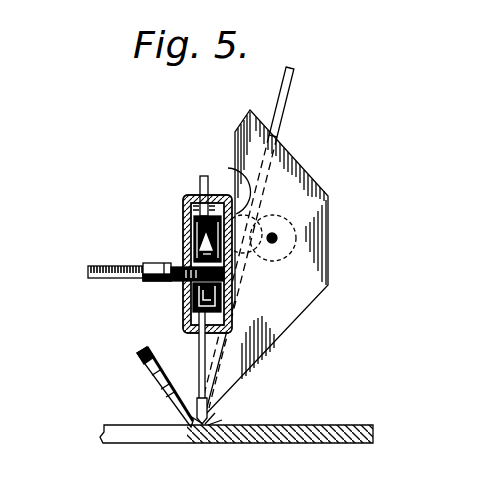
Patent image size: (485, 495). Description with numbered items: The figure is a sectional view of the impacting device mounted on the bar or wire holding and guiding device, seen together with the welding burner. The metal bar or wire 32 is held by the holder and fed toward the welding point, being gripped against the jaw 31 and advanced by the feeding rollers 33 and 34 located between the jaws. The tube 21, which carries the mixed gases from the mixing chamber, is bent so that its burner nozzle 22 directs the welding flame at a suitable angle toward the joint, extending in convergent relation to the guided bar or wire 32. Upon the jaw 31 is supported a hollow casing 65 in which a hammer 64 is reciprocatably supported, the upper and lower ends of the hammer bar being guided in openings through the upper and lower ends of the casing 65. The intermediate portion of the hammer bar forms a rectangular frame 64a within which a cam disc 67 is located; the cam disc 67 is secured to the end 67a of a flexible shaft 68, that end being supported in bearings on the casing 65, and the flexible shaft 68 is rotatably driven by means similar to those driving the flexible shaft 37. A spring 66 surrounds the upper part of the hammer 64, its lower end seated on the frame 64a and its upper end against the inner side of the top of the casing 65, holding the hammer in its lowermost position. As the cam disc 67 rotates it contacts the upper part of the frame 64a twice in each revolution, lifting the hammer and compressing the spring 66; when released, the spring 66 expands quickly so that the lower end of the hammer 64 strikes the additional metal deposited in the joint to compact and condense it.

The tube 21 is at (149, 356).
The burner nozzle 22 is at (162, 393).
The jaw 31 is at (267, 349).
The bar or wire 32 is at (287, 96).
The roller 33 is at (257, 222).
The roller 34 is at (229, 170).
The flexible shaft 37 is at (277, 238).
The hammer 64 is at (199, 350).
The rectangular frame 64a is at (182, 232).
The hollow casing 65 is at (183, 313).
The spring 66 is at (184, 198).
The cam disc 67 is at (182, 250).
The end of flexible shaft 67a is at (182, 281).
The flexible shaft 68 is at (90, 274).